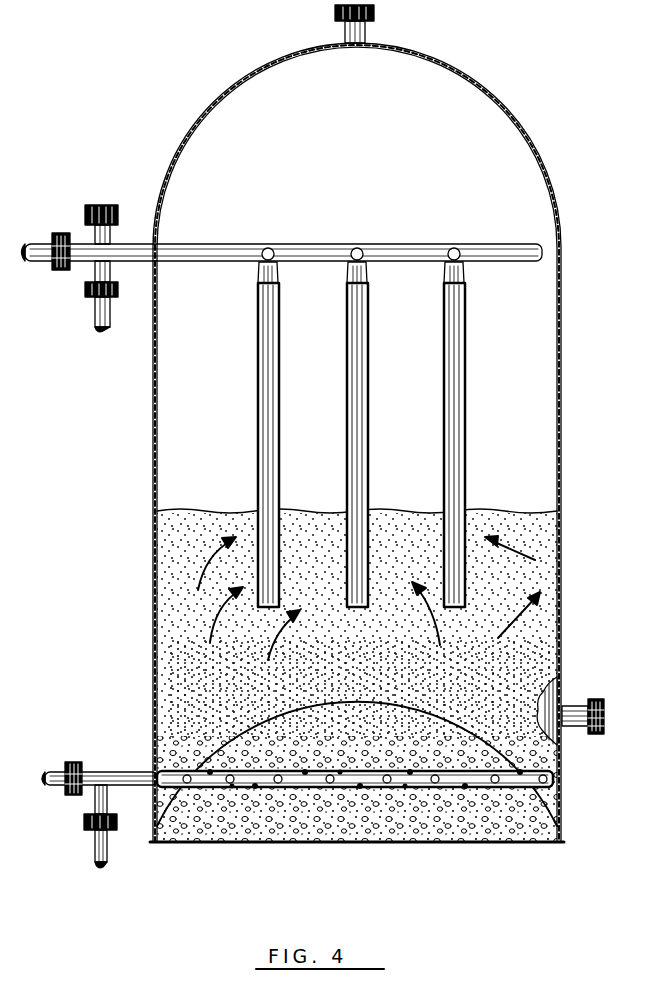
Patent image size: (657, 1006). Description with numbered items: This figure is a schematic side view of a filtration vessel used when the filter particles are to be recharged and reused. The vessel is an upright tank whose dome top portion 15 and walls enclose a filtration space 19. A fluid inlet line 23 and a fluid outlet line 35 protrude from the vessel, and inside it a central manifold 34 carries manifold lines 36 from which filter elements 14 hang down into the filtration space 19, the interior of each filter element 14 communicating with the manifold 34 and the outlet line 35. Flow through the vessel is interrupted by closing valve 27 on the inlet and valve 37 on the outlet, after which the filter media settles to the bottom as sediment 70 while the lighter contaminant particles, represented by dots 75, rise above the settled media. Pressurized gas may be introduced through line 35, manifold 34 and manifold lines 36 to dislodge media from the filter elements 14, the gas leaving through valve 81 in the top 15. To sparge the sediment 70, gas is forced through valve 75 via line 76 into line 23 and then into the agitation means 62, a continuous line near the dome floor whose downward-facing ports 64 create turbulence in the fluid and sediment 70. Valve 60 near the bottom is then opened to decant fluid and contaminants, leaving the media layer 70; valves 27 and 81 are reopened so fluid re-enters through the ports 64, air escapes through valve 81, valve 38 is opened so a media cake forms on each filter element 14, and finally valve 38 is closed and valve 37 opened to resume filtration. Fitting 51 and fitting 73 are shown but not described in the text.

The filter elements 14 is at (260, 440).
The dome top portion 15 is at (563, 205).
The filtration space 19 is at (355, 642).
The fluid inlet line 23 is at (118, 770).
The valve 27 is at (68, 762).
The central manifold 34 is at (205, 243).
The fluid outlet line 35 is at (146, 247).
The manifold lines 36 is at (271, 250).
The valve 37 is at (60, 272).
The valve 38 is at (88, 207).
The drain connection 51 is at (87, 298).
The valve 60 is at (594, 700).
The agitation means 62 is at (427, 778).
The ports 64 is at (330, 787).
The sediment 70 is at (535, 752).
The liquid 73 is at (182, 620).
The valve 75 is at (180, 553).
The line 76 is at (92, 848).
The valve 81 is at (376, 12).